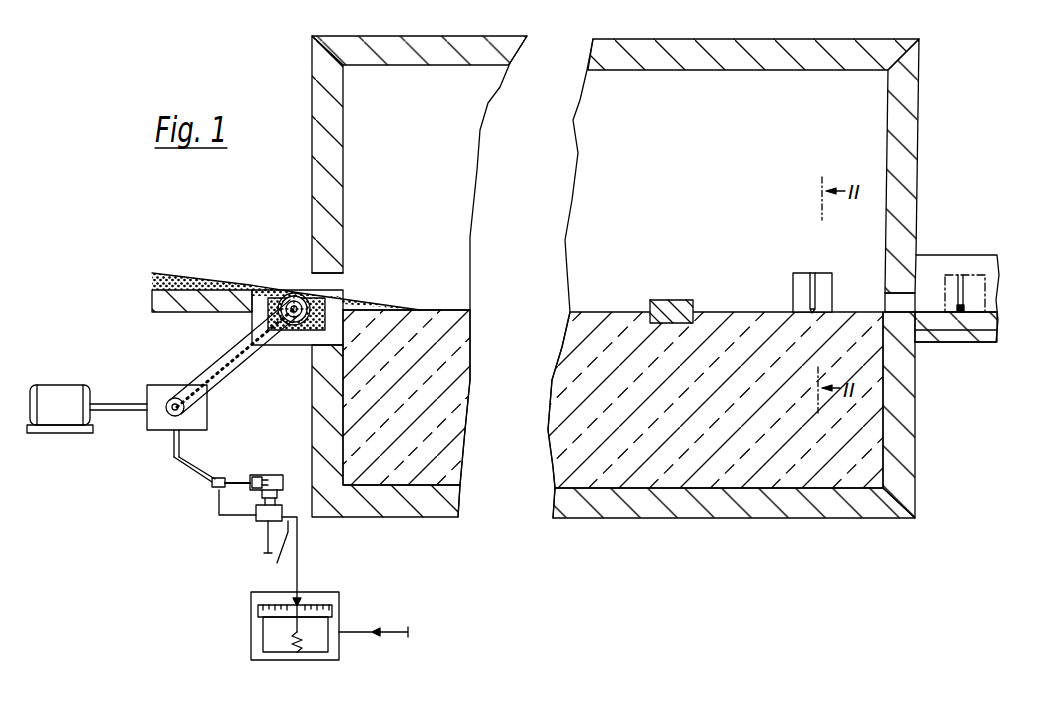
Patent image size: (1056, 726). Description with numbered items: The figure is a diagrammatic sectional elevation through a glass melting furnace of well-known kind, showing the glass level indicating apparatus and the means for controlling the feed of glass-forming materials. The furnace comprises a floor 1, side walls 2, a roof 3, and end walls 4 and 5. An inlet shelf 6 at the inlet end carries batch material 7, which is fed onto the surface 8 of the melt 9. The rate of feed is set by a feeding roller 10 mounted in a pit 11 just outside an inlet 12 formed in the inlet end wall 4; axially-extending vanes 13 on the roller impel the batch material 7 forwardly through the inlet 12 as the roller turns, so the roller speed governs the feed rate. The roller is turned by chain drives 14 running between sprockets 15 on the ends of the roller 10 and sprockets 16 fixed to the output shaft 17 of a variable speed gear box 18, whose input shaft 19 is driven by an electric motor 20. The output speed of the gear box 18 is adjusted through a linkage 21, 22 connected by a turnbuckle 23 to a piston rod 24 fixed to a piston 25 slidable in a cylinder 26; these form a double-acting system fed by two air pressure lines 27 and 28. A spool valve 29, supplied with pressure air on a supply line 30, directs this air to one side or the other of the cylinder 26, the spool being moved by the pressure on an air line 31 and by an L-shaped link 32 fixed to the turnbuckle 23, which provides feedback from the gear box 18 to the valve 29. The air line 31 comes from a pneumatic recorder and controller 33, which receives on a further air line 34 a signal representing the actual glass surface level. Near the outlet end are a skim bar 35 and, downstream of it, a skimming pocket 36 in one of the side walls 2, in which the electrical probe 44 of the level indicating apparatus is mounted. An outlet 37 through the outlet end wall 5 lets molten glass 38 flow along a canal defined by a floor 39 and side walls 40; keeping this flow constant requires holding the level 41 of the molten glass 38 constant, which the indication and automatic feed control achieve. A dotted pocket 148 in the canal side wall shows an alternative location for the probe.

The floor 1 is at (438, 517).
The side walls 2 is at (487, 92).
The roof 3 is at (606, 55).
The inlet end wall 4 is at (322, 96).
The outlet end wall 5 is at (905, 152).
The inlet shelf 6 is at (195, 311).
The batch material 7 is at (210, 284).
The surface of the melt 8 is at (446, 310).
The melt 9 is at (412, 487).
The feeding roller 10 is at (294, 295).
The pit 11 is at (312, 331).
The inlet 12 is at (334, 285).
The axially-extending vanes 13 is at (280, 300).
The chain drives 14 is at (226, 362).
The sprockets 15 is at (290, 334).
The sprockets 16 is at (170, 415).
The output shaft 17 is at (172, 409).
The variable speed gear box 18 is at (163, 395).
The input shaft 19 is at (133, 404).
The electric motor 20 is at (62, 398).
The linkage 21 is at (174, 452).
The linkage 22 is at (190, 470).
The turnbuckle 23 is at (217, 478).
The piston rod 24 is at (244, 482).
The piston 25 is at (272, 476).
The cylinder 26 is at (283, 481).
The air pressure line 27 is at (261, 500).
The air pressure line 28 is at (282, 557).
The spool valve 29 is at (258, 517).
The supply line 30 is at (264, 553).
The air line 31 is at (298, 553).
The L-shaped link 32 is at (222, 516).
The pneumatic recorder and controller 33 is at (306, 605).
The air line 34 is at (363, 632).
The skim bar 35 is at (675, 302).
The skimming pocket 36 is at (801, 280).
The outlet 37 is at (884, 303).
The molten glass 38 is at (786, 320).
The canal floor 39 is at (964, 337).
The canal side walls 40 is at (927, 265).
The level of the molten glass 41 is at (732, 311).
The electrical probe 44 is at (821, 281).
The pocket 148 is at (970, 275).